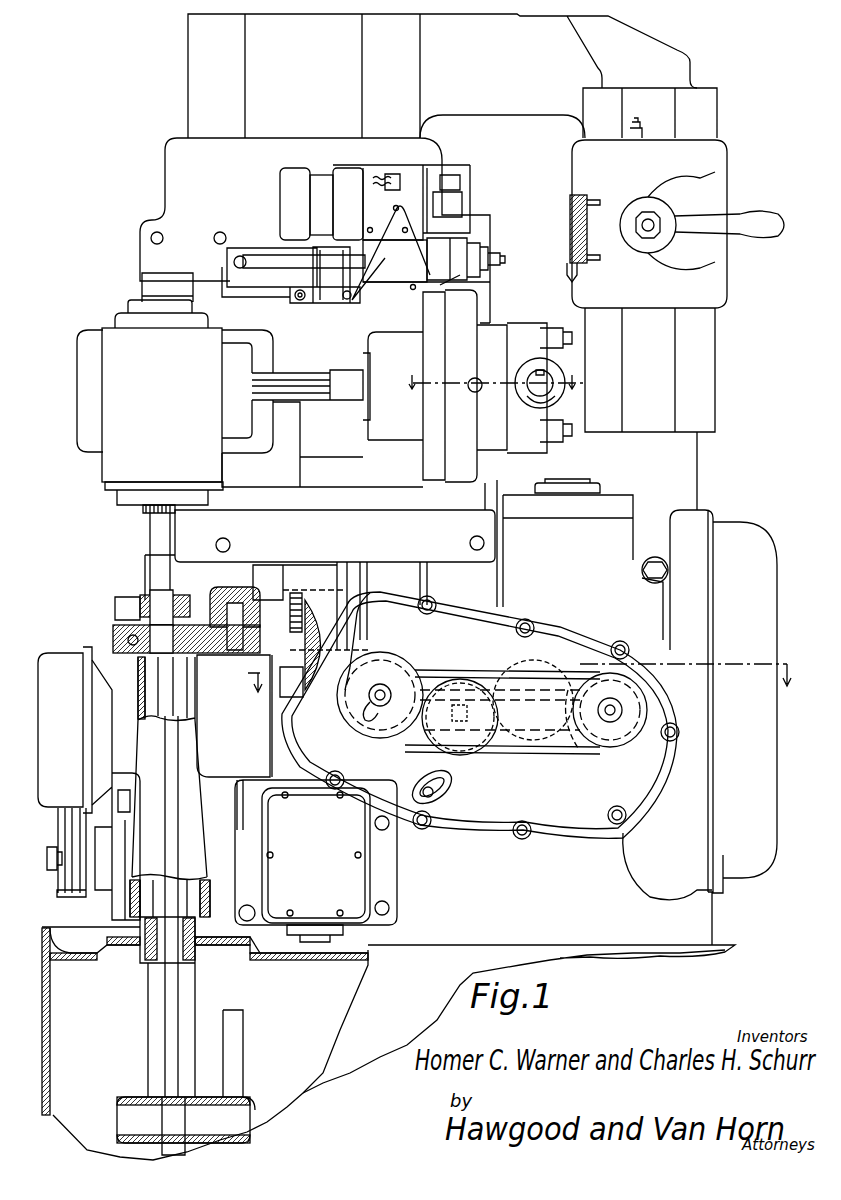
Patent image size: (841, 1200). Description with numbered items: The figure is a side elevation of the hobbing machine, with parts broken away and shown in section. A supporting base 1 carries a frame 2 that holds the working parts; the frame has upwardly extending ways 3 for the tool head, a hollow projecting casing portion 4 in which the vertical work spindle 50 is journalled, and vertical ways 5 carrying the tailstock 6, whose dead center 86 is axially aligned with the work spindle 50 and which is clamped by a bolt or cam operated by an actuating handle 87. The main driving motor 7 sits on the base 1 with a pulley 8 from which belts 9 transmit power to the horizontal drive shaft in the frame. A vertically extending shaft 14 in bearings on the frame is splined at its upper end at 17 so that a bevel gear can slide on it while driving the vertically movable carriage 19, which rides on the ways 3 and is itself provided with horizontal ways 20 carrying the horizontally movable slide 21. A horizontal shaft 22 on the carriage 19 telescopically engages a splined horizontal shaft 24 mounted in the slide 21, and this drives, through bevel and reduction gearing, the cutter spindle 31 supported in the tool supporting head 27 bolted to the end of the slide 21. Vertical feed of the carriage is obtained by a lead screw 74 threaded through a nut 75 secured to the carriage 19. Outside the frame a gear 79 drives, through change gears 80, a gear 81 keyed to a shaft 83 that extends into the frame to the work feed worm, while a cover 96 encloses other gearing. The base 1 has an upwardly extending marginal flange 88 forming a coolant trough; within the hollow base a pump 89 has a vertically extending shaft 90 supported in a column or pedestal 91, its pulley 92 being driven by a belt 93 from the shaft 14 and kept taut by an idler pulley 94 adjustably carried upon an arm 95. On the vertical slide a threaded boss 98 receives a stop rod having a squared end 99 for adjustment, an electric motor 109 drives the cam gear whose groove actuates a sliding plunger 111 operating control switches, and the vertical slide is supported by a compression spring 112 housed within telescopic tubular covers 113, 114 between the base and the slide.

The supporting base 1 is at (338, 1052).
The frame 2 is at (387, 940).
The upwardly extending ways 3 is at (237, 60).
The hollow projecting casing portion 4 is at (494, 720).
The vertical ways 5 is at (680, 107).
The tailstock 6 is at (712, 160).
The main driving motor 7 is at (118, 880).
The pulley 8 is at (55, 829).
The belts 9 is at (70, 870).
The vertically extending shaft 14 is at (152, 540).
The splined portion 17 is at (150, 520).
The vertically movable carriage 19 is at (166, 154).
The horizontal ways 20 is at (170, 228).
The horizontally movable slide 21 is at (208, 289).
The horizontal shaft 22 is at (308, 400).
The horizontal shaft 24 is at (345, 415).
The tool supporting head 27 is at (467, 302).
The cutter spindle 31 is at (546, 392).
The work spindle 50 is at (575, 485).
The lead screw 74 is at (289, 603).
The nut 75 is at (286, 565).
The gear 79 is at (638, 708).
The change gears 80 is at (505, 670).
The gear 81 is at (398, 672).
The shaft 83 is at (371, 716).
The dead center 86 is at (561, 273).
The actuating handle 87 is at (755, 232).
The marginal flange 88 is at (45, 925).
The pump 89 is at (140, 1118).
The vertically extending shaft 90 is at (197, 960).
The column or pedestal 91 is at (169, 877).
The pulley 92 is at (140, 600).
The belt 93 is at (118, 608).
The idler pulley 94 is at (272, 585).
The arm 95 is at (205, 650).
The cover 96 is at (748, 537).
The threaded boss 98 is at (470, 248).
The squared end 99 is at (495, 258).
The electric motor 109 is at (290, 178).
The sliding plunger 111 is at (262, 258).
The compression spring 112 is at (290, 624).
The telescopic tubular cover 113 is at (362, 578).
The telescopic tubular cover 114 is at (360, 592).